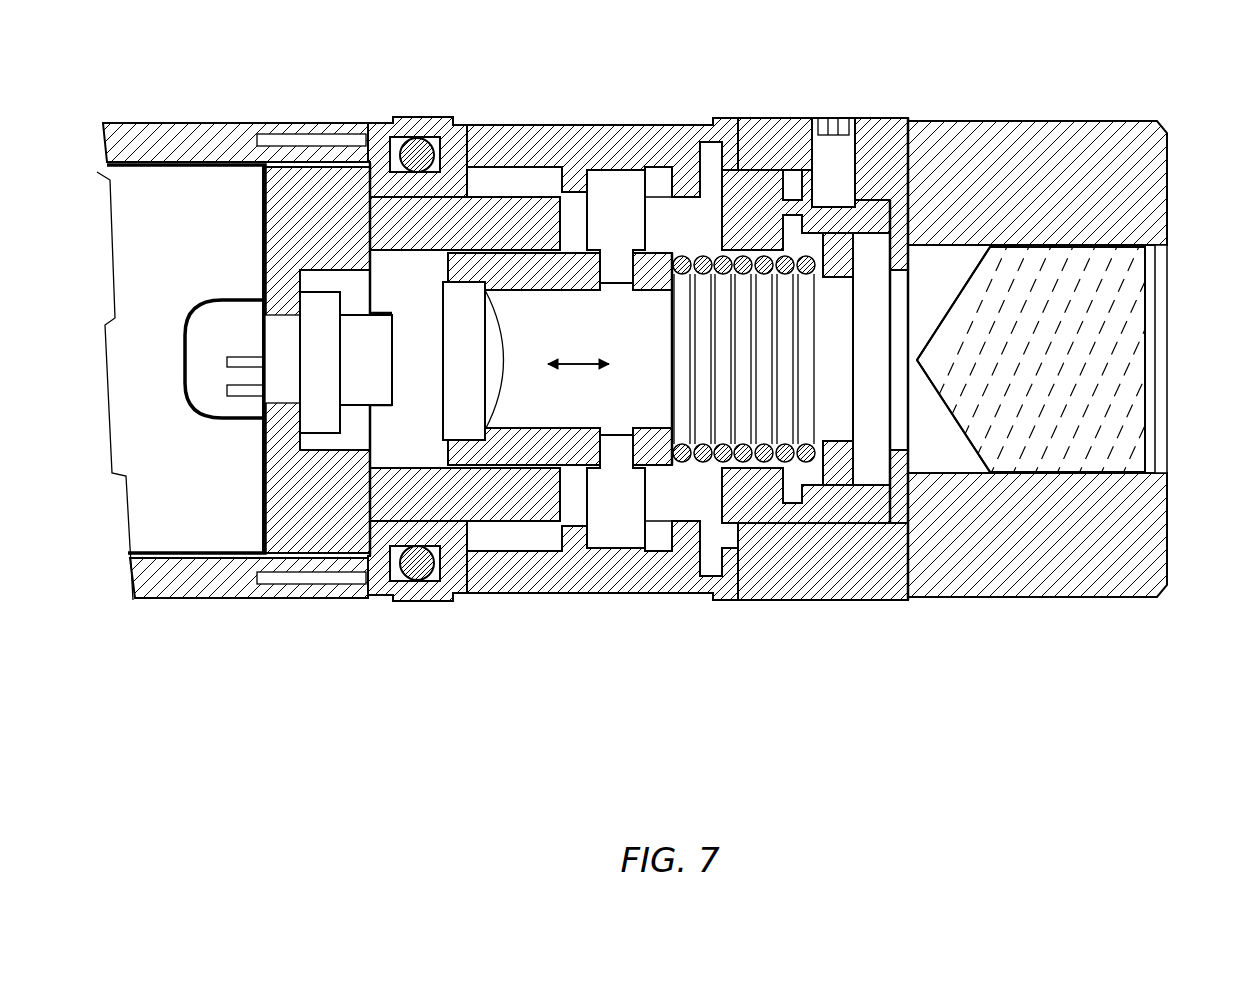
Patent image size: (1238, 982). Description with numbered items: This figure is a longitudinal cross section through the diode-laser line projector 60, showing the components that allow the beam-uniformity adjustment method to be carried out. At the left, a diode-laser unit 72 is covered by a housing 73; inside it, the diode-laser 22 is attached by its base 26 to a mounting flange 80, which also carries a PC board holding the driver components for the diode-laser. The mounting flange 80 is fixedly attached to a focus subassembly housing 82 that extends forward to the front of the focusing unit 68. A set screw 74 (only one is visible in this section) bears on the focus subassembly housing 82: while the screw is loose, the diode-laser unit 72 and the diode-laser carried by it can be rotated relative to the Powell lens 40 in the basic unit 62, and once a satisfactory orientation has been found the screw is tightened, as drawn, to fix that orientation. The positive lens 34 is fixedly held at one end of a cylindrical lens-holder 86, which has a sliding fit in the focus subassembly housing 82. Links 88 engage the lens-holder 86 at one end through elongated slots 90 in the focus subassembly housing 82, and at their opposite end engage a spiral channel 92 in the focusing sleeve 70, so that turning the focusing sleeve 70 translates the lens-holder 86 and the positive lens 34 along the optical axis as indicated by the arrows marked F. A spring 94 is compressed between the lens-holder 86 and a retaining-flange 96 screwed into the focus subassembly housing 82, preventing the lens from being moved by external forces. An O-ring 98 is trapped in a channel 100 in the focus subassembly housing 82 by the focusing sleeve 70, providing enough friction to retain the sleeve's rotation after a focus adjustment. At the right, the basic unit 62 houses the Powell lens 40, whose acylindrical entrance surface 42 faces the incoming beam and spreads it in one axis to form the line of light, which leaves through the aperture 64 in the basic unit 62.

The diode-laser 22 is at (358, 413).
The base 26 is at (318, 433).
The positive lens 34 is at (510, 390).
The Powell lens 40 is at (1010, 478).
The acylindrical entrance surface 42 is at (960, 430).
The diode-laser line projector 60 is at (885, 745).
The basic unit 62 is at (1003, 118).
The aperture 64 is at (1157, 413).
The focusing unit 68 is at (497, 100).
The focusing sleeve 70 is at (607, 172).
The diode-laser unit 72 is at (242, 117).
The housing 73 is at (163, 122).
The set screws 74 is at (845, 120).
The mounting flange 80 is at (330, 205).
The focus subassembly housing 82 is at (868, 195).
The cylindrical lens-holder 86 is at (490, 475).
The links 88 is at (665, 210).
The elongated slots 90 is at (672, 197).
The spiral channel 92 is at (628, 212).
The spring 94 is at (745, 460).
The retaining-flange 96 is at (835, 490).
The O-ring 98 is at (420, 150).
The channel 100 is at (393, 140).